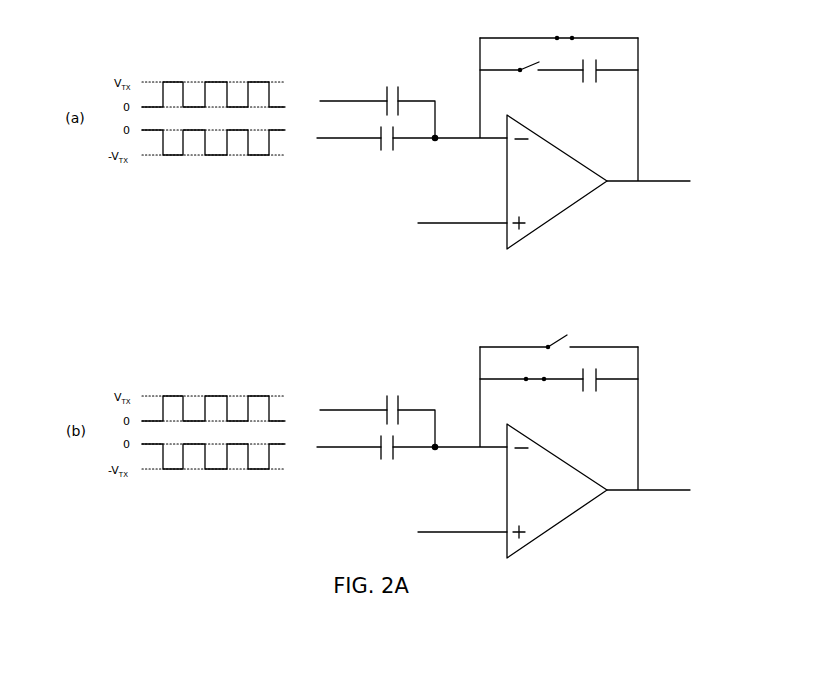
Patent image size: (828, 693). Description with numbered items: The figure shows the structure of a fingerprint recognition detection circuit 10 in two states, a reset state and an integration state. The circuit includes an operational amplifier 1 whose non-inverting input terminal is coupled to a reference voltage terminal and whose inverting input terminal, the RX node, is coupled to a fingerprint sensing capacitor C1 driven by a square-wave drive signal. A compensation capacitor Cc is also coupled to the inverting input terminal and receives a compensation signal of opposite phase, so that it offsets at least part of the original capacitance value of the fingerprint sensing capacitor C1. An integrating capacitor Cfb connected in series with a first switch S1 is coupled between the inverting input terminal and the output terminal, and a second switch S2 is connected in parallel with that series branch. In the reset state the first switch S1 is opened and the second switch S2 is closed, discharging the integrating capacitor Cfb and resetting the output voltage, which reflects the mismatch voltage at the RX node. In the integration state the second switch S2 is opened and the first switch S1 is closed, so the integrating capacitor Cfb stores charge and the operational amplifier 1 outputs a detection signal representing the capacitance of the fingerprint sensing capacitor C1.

The fingerprint recognition detection circuit 10 is at (294, 25).
The operational amplifier 1 is at (565, 197).
The fingerprint sensing capacitor C1 is at (392, 247).
The compensation capacitor Cc is at (387, 304).
The integrating capacitor Cfb is at (609, 234).
The first switch S1 is at (531, 231).
The second switch S2 is at (559, 184).
The RX node RX is at (435, 304).